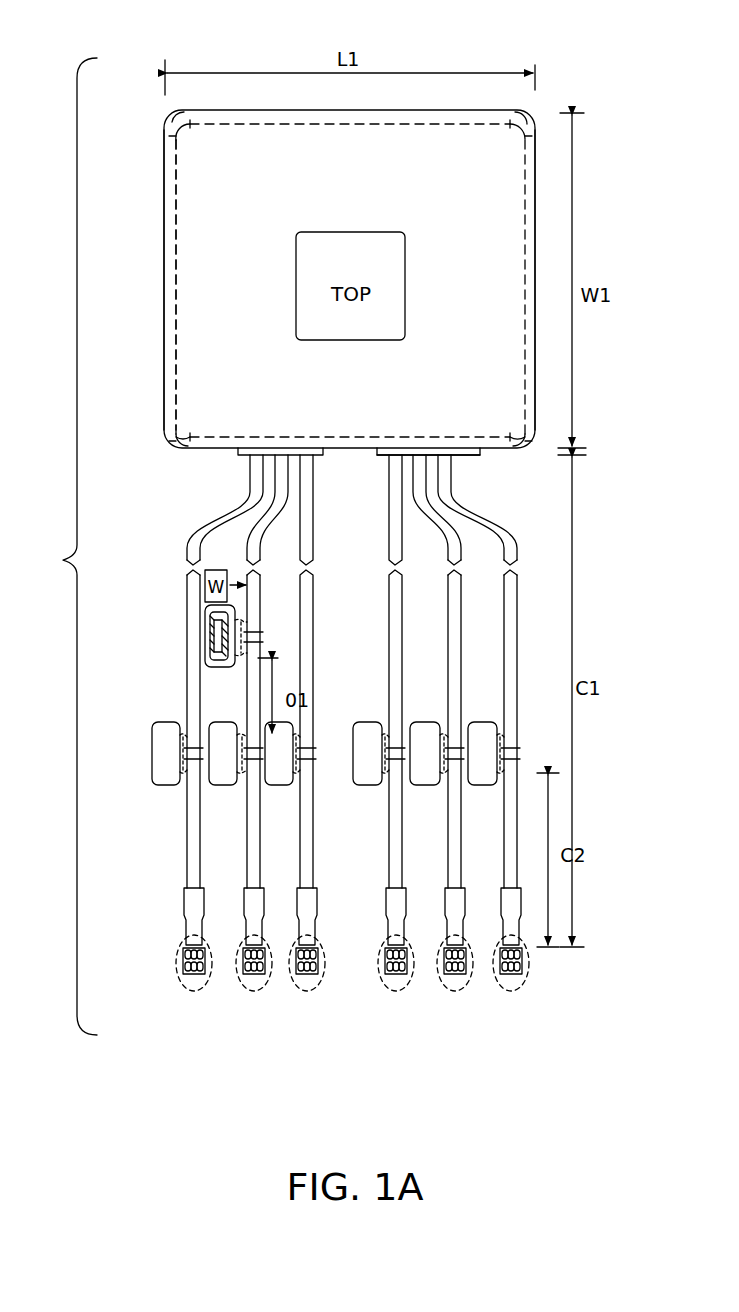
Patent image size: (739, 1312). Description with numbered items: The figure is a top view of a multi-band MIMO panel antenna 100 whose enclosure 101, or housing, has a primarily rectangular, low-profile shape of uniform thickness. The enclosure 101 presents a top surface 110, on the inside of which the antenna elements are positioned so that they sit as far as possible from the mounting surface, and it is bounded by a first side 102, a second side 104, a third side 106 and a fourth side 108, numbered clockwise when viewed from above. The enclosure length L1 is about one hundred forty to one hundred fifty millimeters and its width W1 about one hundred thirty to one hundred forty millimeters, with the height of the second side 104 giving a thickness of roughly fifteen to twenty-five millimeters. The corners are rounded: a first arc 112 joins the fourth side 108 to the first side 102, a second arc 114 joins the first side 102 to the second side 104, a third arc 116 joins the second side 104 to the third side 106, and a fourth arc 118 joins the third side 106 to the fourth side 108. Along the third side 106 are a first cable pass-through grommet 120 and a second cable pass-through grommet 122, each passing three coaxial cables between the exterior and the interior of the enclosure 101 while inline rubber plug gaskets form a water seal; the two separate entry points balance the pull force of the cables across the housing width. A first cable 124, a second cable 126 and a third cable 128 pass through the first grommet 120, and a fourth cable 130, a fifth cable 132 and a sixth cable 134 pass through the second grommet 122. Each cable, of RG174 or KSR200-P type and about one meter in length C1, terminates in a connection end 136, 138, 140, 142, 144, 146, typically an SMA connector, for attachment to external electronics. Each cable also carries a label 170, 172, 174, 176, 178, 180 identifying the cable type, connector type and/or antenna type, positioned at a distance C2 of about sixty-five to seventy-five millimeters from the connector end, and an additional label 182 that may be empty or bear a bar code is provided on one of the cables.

The multi-band MIMO panel antenna 100 is at (62, 560).
The enclosure 101 is at (165, 235).
The first side 102 is at (400, 110).
The second side 104 is at (530, 235).
The third side 106 is at (480, 455).
The fourth side 108 is at (163, 290).
The top surface 110 is at (280, 135).
The first arc 112 is at (175, 128).
The second arc 114 is at (530, 125).
The third arc 116 is at (530, 445).
The fourth arc 118 is at (172, 440).
The first cable pass-through grommet 120 is at (262, 455).
The second cable pass-through grommet 122 is at (466, 460).
The first cable 124 is at (192, 622).
The second cable 126 is at (250, 667).
The third cable 128 is at (313, 642).
The fourth cable 130 is at (400, 645).
The fifth cable 132 is at (453, 663).
The sixth cable 134 is at (517, 633).
The connection end 136 is at (180, 958).
The connection end 138 is at (247, 985).
The connection end 140 is at (306, 985).
The connection end 142 is at (412, 978).
The connection end 144 is at (466, 958).
The connection end 146 is at (525, 963).
The label 170 is at (165, 785).
The label 172 is at (232, 785).
The label 174 is at (288, 785).
The label 176 is at (366, 785).
The label 178 is at (432, 785).
The label 180 is at (492, 785).
The additional label 182 is at (214, 636).